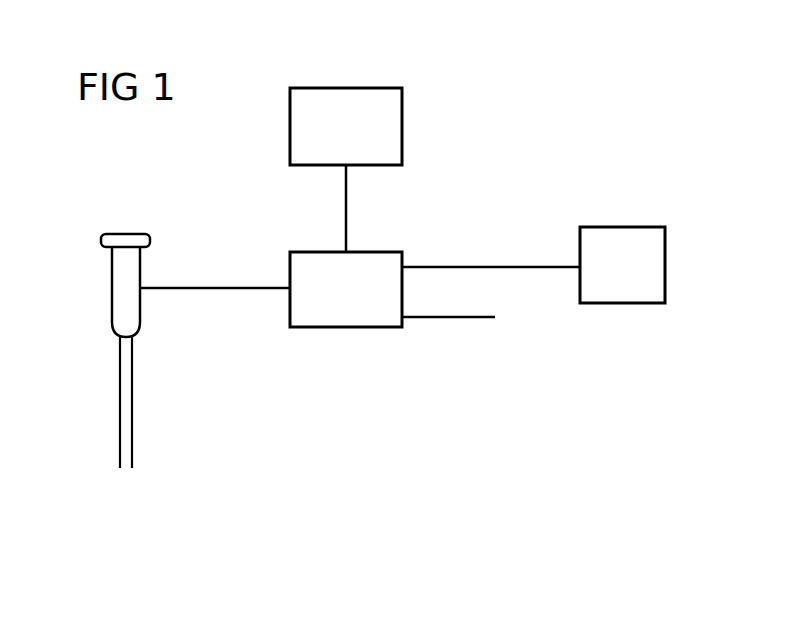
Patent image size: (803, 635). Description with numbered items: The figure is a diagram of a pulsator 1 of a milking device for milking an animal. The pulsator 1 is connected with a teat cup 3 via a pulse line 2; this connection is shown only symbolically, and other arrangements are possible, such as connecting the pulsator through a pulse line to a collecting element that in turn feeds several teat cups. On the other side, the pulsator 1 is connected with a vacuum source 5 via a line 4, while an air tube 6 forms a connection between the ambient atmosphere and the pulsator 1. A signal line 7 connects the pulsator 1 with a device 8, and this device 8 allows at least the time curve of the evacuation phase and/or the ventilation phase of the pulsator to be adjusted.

The pulsator 1 is at (338, 328).
The pulse line 2 is at (212, 290).
The teat cup 3 is at (112, 302).
The line 4 is at (476, 266).
The vacuum source 5 is at (614, 227).
The air tube 6 is at (458, 320).
The signal line 7 is at (346, 212).
The device 8 is at (402, 95).